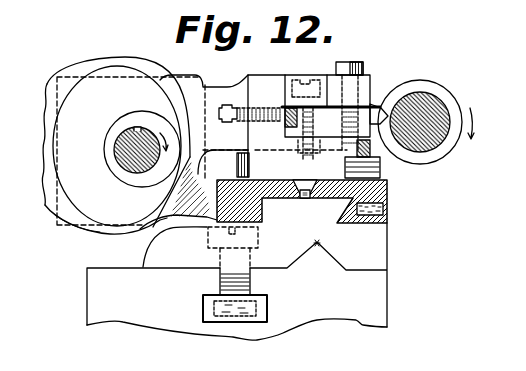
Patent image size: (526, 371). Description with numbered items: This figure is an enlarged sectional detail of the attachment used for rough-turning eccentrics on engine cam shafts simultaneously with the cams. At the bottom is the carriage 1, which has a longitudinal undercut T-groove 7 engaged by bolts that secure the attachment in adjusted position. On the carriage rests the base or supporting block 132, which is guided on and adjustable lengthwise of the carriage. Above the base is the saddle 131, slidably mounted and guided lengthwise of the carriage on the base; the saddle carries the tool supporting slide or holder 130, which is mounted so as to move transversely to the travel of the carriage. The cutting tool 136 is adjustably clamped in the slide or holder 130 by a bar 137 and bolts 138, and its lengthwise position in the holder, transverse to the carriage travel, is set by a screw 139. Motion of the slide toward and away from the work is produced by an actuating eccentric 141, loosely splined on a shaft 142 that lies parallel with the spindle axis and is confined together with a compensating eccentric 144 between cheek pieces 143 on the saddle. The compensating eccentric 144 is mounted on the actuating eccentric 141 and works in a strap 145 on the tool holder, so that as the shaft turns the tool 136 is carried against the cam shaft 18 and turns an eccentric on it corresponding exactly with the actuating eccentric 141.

The carriage 1 is at (87, 302).
The T-groove 7 is at (268, 306).
The cam shaft 18 is at (438, 100).
The tool supporting slide or holder 130 is at (265, 83).
The saddle 131 is at (388, 199).
The base or supporting block 132 is at (178, 212).
The cutting tool 136 is at (378, 100).
The bar 137 is at (372, 86).
The bolts 138 is at (349, 62).
The screw 139 is at (227, 105).
The actuating eccentric 141 is at (113, 132).
The shaft 142 is at (117, 163).
The cheek pieces 143 is at (177, 75).
The compensating eccentric 144 is at (100, 85).
The strap 145 is at (73, 229).